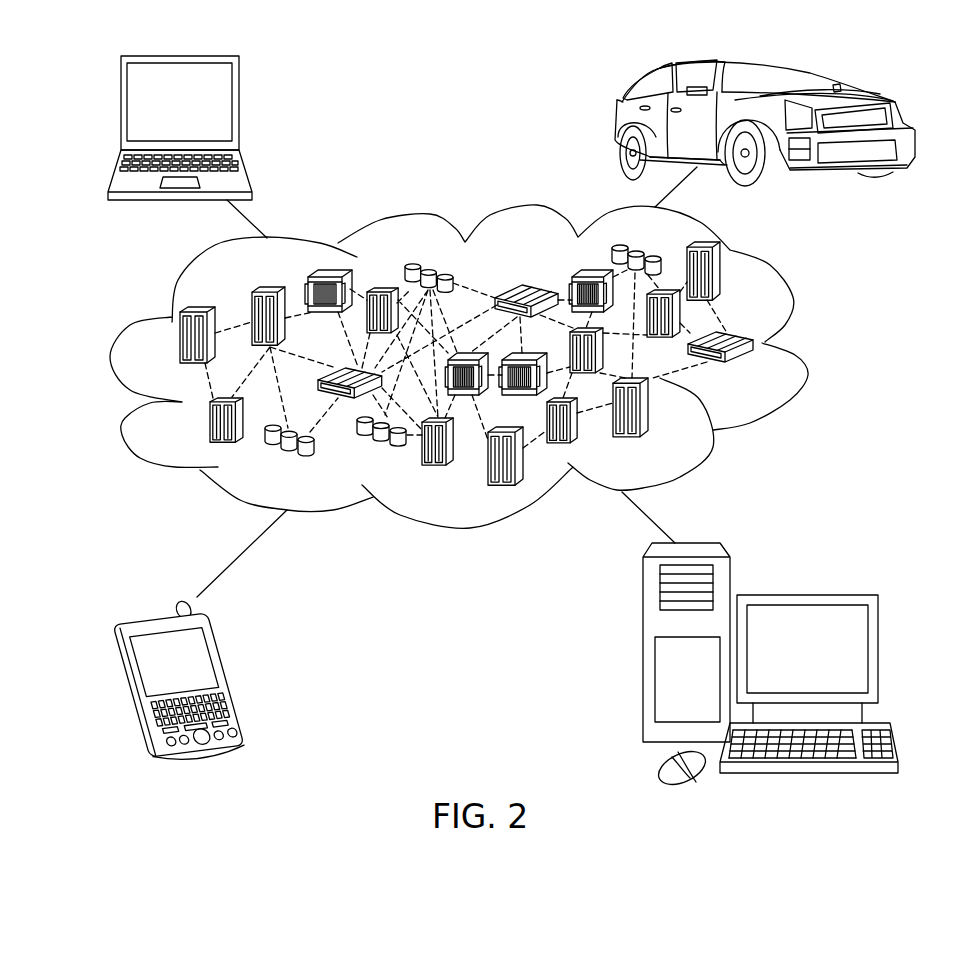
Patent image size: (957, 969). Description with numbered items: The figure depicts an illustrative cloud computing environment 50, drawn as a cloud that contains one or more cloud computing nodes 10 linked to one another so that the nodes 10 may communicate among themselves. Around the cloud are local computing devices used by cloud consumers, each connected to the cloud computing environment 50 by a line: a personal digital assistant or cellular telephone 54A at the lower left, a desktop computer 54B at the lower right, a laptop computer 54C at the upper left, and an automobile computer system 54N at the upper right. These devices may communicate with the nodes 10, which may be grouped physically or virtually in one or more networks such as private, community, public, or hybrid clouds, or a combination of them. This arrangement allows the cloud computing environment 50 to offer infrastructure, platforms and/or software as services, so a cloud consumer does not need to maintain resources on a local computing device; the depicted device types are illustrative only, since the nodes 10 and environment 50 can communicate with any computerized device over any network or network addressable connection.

The cloud computing node 10 is at (758, 372).
The cloud computing environment 50 is at (482, 366).
The personal digital assistant (PDA) or cellular telephone 54A is at (232, 673).
The desktop computer 54B is at (807, 595).
The laptop computer 54C is at (239, 110).
The automobile computer system 54N is at (615, 122).